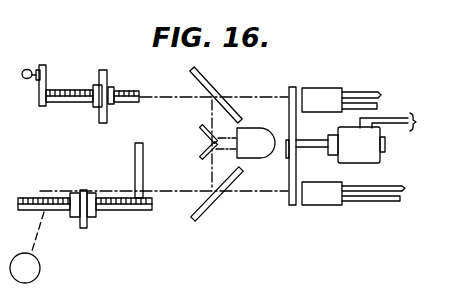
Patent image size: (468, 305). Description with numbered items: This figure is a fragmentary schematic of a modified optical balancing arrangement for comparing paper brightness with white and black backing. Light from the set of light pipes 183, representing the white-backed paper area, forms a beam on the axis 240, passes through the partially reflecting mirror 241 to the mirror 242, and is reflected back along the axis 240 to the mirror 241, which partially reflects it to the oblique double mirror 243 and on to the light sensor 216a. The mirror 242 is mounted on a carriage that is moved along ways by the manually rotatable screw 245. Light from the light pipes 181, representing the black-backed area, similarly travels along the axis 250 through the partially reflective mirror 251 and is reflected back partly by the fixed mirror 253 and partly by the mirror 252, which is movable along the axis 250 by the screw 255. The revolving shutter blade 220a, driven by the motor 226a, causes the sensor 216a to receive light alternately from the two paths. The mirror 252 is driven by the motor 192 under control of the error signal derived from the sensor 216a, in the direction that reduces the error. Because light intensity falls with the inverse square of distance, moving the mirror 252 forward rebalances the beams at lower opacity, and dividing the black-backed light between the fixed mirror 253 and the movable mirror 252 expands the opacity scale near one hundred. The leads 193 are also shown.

The mirror 242 is at (99, 76).
The manually rotatable screw 245 is at (72, 103).
The axis 240 is at (180, 97).
The partially reflecting mirror 241 is at (212, 82).
The oblique double mirror 243 is at (203, 137).
The light sensor 216a is at (255, 159).
The revolving shutter blade 220a is at (290, 87).
The set of light pipes 183 is at (362, 91).
The output leads 193 is at (404, 123).
The motor 226a is at (372, 163).
The light pipes 181 is at (358, 207).
The axis 250 is at (264, 193).
The partially reflective mirror 251 is at (200, 209).
The screw 255 is at (141, 210).
The movable mirror 252 is at (87, 228).
The fixed mirror 253 is at (135, 167).
The motor 192 is at (41, 262).